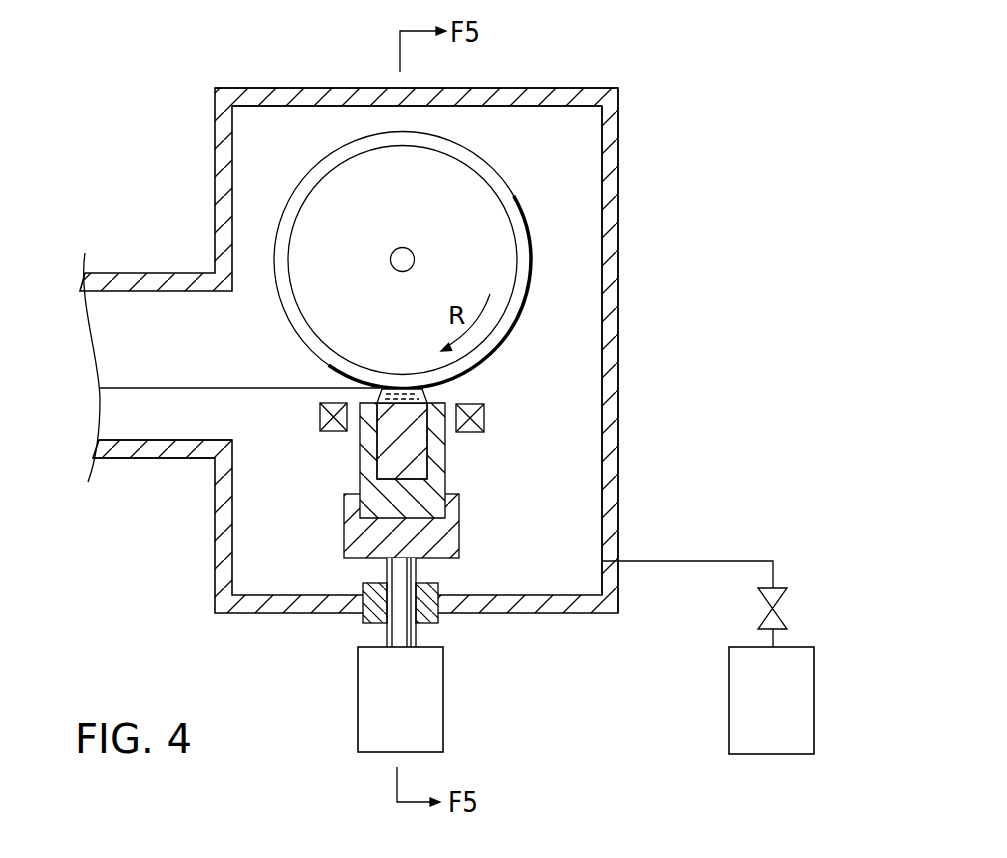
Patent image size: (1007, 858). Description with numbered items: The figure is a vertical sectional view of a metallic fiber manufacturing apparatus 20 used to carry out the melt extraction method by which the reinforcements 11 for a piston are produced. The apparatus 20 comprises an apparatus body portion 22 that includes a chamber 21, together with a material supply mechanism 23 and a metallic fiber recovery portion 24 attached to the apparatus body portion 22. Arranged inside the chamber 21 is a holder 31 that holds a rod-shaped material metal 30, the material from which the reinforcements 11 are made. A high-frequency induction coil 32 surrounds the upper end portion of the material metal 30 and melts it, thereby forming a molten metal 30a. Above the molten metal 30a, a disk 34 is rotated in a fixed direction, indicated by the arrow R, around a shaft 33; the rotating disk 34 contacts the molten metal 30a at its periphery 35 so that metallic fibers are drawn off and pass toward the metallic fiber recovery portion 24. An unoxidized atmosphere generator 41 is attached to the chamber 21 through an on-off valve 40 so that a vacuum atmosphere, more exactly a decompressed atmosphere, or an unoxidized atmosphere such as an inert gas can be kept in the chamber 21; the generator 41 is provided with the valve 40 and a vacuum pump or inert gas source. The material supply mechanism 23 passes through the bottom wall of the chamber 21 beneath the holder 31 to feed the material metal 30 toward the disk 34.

The reinforcements 11 is at (167, 388).
The metallic fiber manufacturing apparatus 20 is at (184, 101).
The chamber 21 is at (283, 88).
The apparatus body portion 22 is at (612, 80).
The material supply mechanism 23 is at (350, 640).
The metallic fiber recovery portion 24 is at (146, 459).
The material metal 30 is at (457, 425).
The molten metal 30a is at (410, 387).
The holder 31 is at (360, 468).
The high-frequency induction coil 32 is at (486, 418).
The shaft 33 is at (413, 253).
The disk 34 is at (524, 216).
The drum peripheral surface 35 is at (316, 356).
The on-off valve 40 is at (758, 616).
The unoxidized atmosphere generator 41 is at (729, 710).